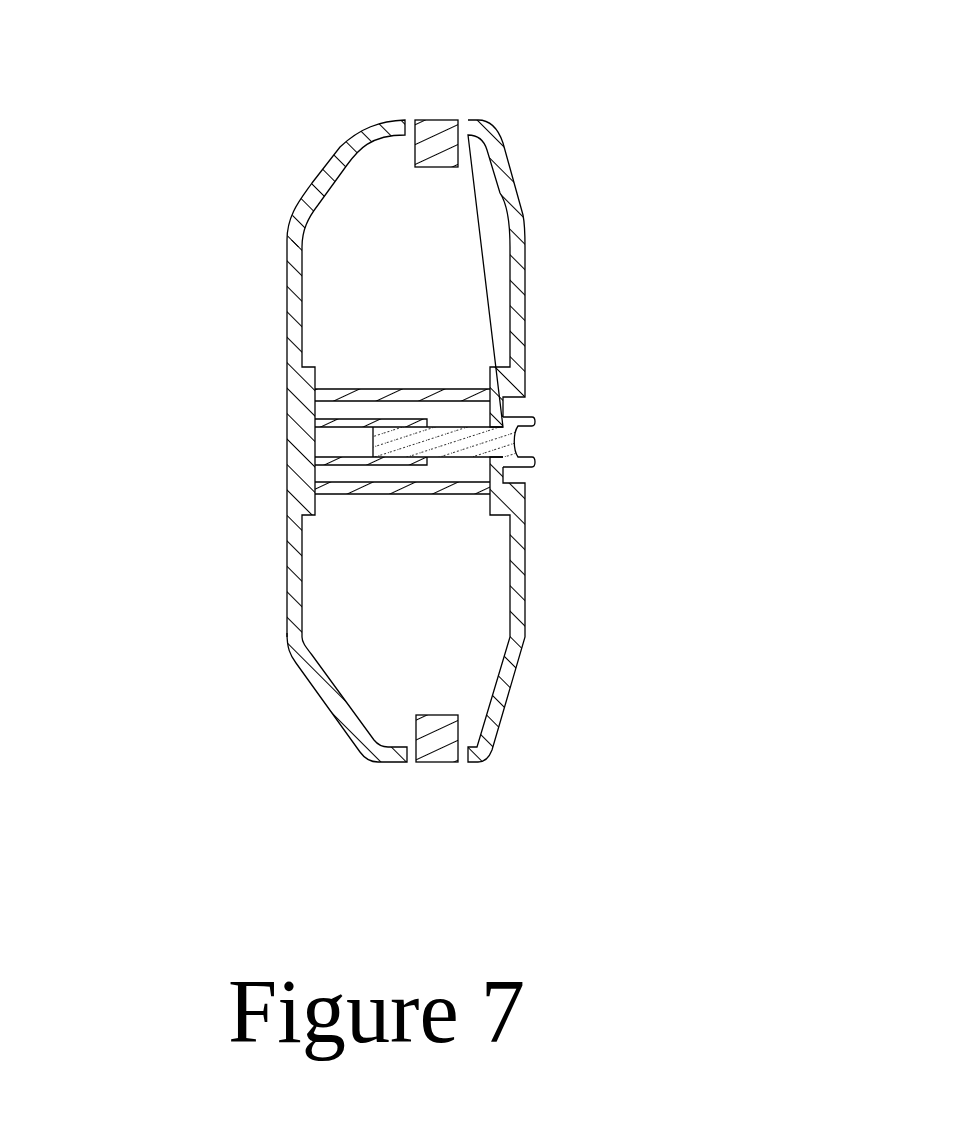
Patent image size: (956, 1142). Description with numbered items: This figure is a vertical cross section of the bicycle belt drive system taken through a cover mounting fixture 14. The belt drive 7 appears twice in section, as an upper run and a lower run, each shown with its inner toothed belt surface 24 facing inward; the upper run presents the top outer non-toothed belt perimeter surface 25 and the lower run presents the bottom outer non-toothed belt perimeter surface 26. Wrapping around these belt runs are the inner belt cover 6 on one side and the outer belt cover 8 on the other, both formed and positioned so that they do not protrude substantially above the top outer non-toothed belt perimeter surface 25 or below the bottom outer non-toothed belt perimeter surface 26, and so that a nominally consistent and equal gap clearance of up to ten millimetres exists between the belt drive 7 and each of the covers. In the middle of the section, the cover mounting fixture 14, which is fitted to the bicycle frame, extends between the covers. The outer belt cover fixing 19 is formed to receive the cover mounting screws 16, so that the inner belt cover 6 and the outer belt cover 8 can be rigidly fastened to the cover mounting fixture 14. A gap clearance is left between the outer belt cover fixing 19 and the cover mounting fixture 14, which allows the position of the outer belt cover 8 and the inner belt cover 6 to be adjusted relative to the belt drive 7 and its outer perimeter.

The inner belt cover 6 is at (525, 250).
The belt drive 7 is at (509, 464).
The outer belt cover 8 is at (287, 360).
The cover mounting fixture 14 is at (383, 494).
The cover mounting screws 16 is at (537, 417).
The outer belt cover fixing 19 is at (413, 463).
The inner toothed belt surface 24 is at (433, 167).
The top outer non-toothed belt perimeter surface 25 is at (448, 120).
The bottom outer non-toothed belt perimeter surface 26 is at (447, 762).